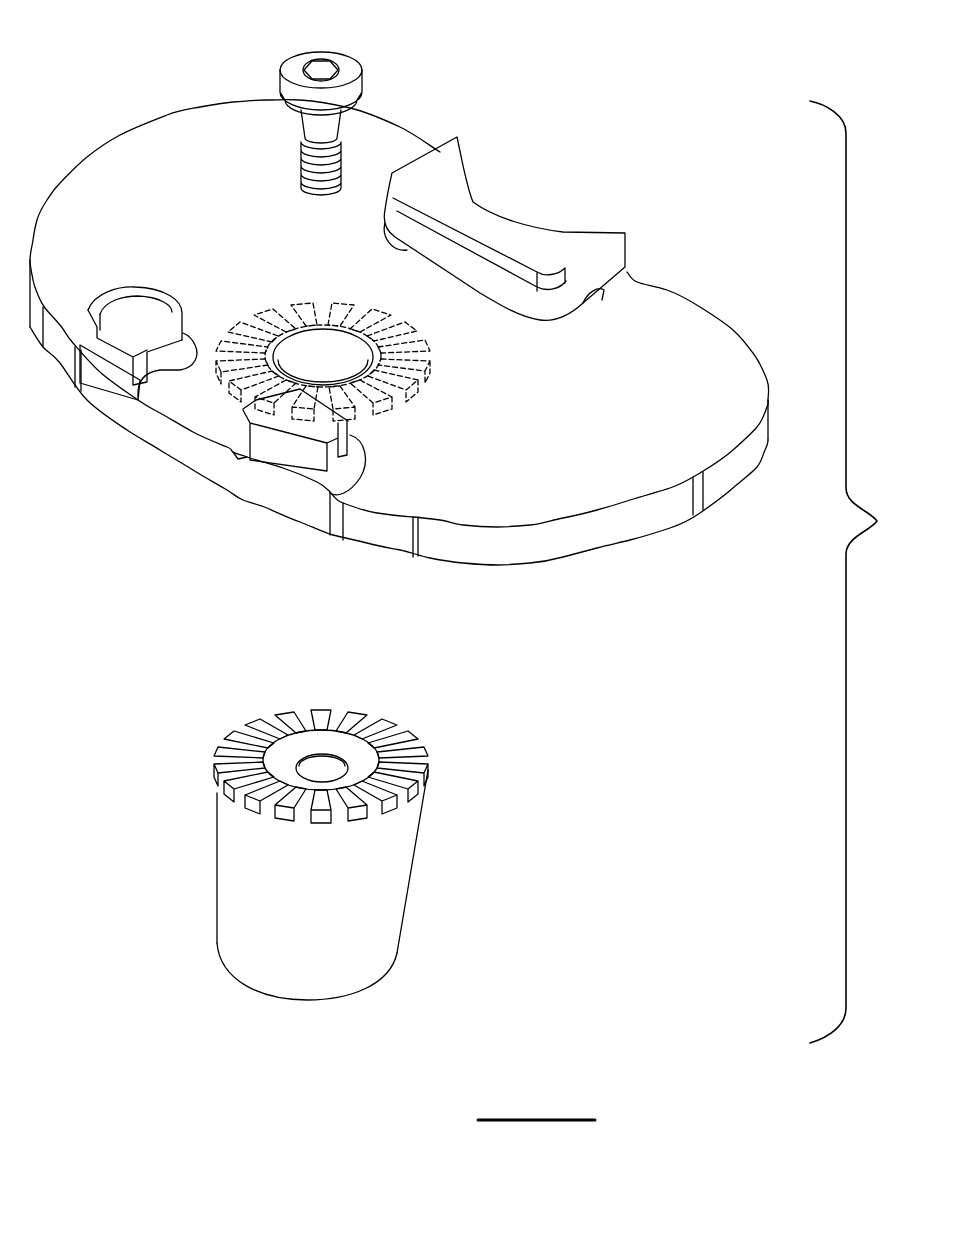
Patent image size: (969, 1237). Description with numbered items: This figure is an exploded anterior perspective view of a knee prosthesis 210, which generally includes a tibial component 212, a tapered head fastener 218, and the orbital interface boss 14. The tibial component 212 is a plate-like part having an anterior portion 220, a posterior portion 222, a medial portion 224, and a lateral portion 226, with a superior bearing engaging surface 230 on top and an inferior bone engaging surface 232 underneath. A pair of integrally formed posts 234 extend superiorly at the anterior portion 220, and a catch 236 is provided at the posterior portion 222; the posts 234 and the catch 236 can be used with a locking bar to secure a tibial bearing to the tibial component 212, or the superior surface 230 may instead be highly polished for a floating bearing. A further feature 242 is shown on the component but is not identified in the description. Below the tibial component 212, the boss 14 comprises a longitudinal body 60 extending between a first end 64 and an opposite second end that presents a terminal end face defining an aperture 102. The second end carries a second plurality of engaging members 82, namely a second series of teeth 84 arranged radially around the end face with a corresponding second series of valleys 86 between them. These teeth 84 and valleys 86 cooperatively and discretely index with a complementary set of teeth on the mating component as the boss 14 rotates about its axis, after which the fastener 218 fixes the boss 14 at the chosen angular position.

The boss 14 is at (247, 900).
The longitudinal body 60 is at (420, 838).
The first end 64 is at (350, 1000).
The second plurality of engaging members 82 is at (433, 749).
The second series of teeth 84 is at (265, 715).
The second series of valleys 86 is at (353, 813).
The aperture 102 is at (318, 765).
The knee prosthesis 210 is at (614, 766).
The tibial component 212 is at (600, 495).
The tapered head fastener 218 is at (343, 68).
The anterior portion 220 is at (210, 421).
The posterior portion 222 is at (550, 227).
The medial portion 224 is at (738, 377).
The lateral portion 226 is at (152, 165).
The superior bearing engaging surface 230 is at (662, 332).
The inferior bone engaging surface 232 is at (428, 557).
The posts 234 is at (137, 305).
The catch 236 is at (467, 203).
The serrated ring recess 242 is at (438, 382).